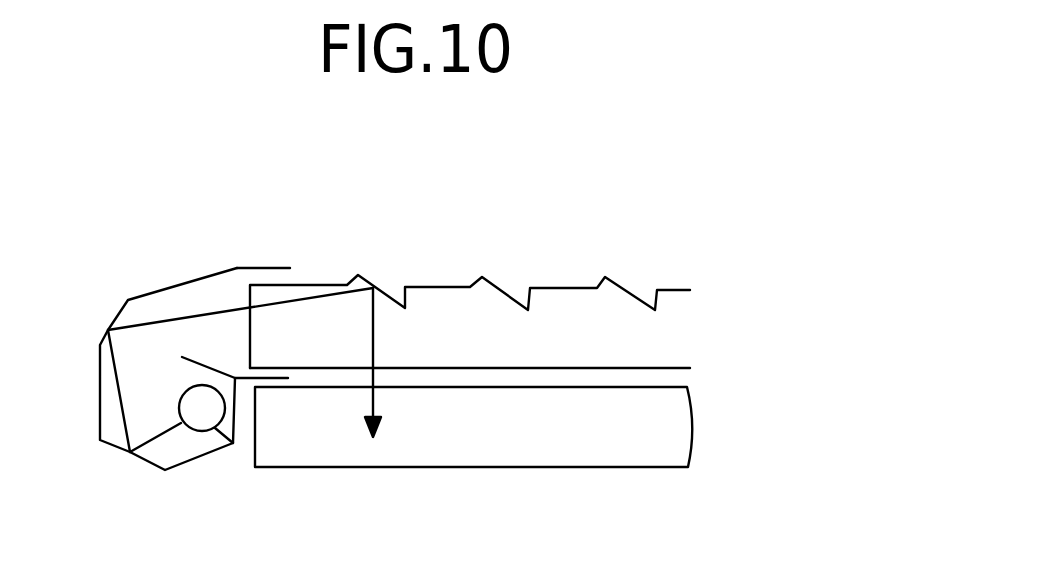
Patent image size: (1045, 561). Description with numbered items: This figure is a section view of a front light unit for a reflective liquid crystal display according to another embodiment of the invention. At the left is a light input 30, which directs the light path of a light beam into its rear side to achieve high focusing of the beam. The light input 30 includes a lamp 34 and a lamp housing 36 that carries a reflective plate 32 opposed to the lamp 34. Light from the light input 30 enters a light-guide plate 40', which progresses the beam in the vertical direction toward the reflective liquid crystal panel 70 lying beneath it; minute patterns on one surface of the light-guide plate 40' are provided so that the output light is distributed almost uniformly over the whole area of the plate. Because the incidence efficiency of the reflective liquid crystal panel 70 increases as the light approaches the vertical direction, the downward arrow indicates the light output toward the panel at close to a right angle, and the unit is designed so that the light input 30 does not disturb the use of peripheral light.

The light input 30 is at (150, 238).
The reflective plate 32 is at (205, 362).
The lamp 34 is at (215, 428).
The lamp housing 36 is at (258, 267).
The light-guide plate 40' is at (470, 321).
The reflective liquid crystal panel 70 is at (660, 443).